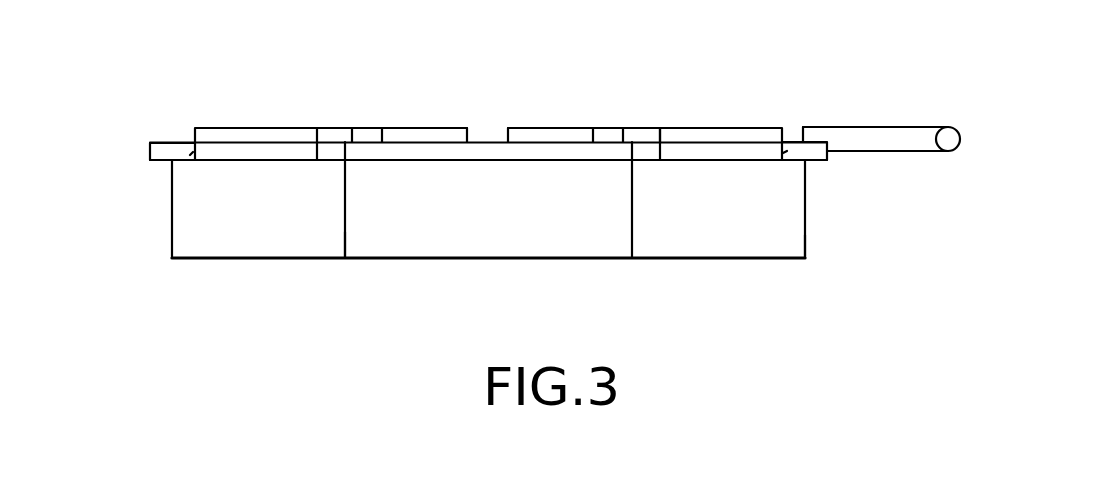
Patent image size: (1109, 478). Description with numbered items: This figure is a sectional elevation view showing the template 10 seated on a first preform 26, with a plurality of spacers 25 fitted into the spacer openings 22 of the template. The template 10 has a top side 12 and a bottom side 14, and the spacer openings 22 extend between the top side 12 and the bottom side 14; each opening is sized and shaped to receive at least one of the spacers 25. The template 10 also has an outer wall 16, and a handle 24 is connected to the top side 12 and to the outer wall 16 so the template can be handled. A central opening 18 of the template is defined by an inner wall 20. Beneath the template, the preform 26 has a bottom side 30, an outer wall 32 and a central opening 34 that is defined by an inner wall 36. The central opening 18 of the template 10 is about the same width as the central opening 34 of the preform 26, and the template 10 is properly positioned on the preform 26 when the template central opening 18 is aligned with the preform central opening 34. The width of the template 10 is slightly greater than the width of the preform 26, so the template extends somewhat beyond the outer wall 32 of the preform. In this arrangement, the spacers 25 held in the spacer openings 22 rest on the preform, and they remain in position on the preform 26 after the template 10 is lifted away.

The template 10 is at (410, 142).
The top side 12 is at (168, 143).
The bottom side 14 is at (808, 163).
The outer wall 16 is at (147, 152).
The central opening 18 is at (575, 150).
The inner wall 20 is at (350, 150).
The spacer openings 22 is at (193, 152).
The handle 24 is at (925, 127).
The spacers 25 is at (250, 127).
The first preform 26 is at (785, 245).
The bottom side 30 is at (697, 260).
The outer wall 32 is at (805, 218).
The central opening 34 is at (512, 238).
The inner wall 36 is at (345, 232).